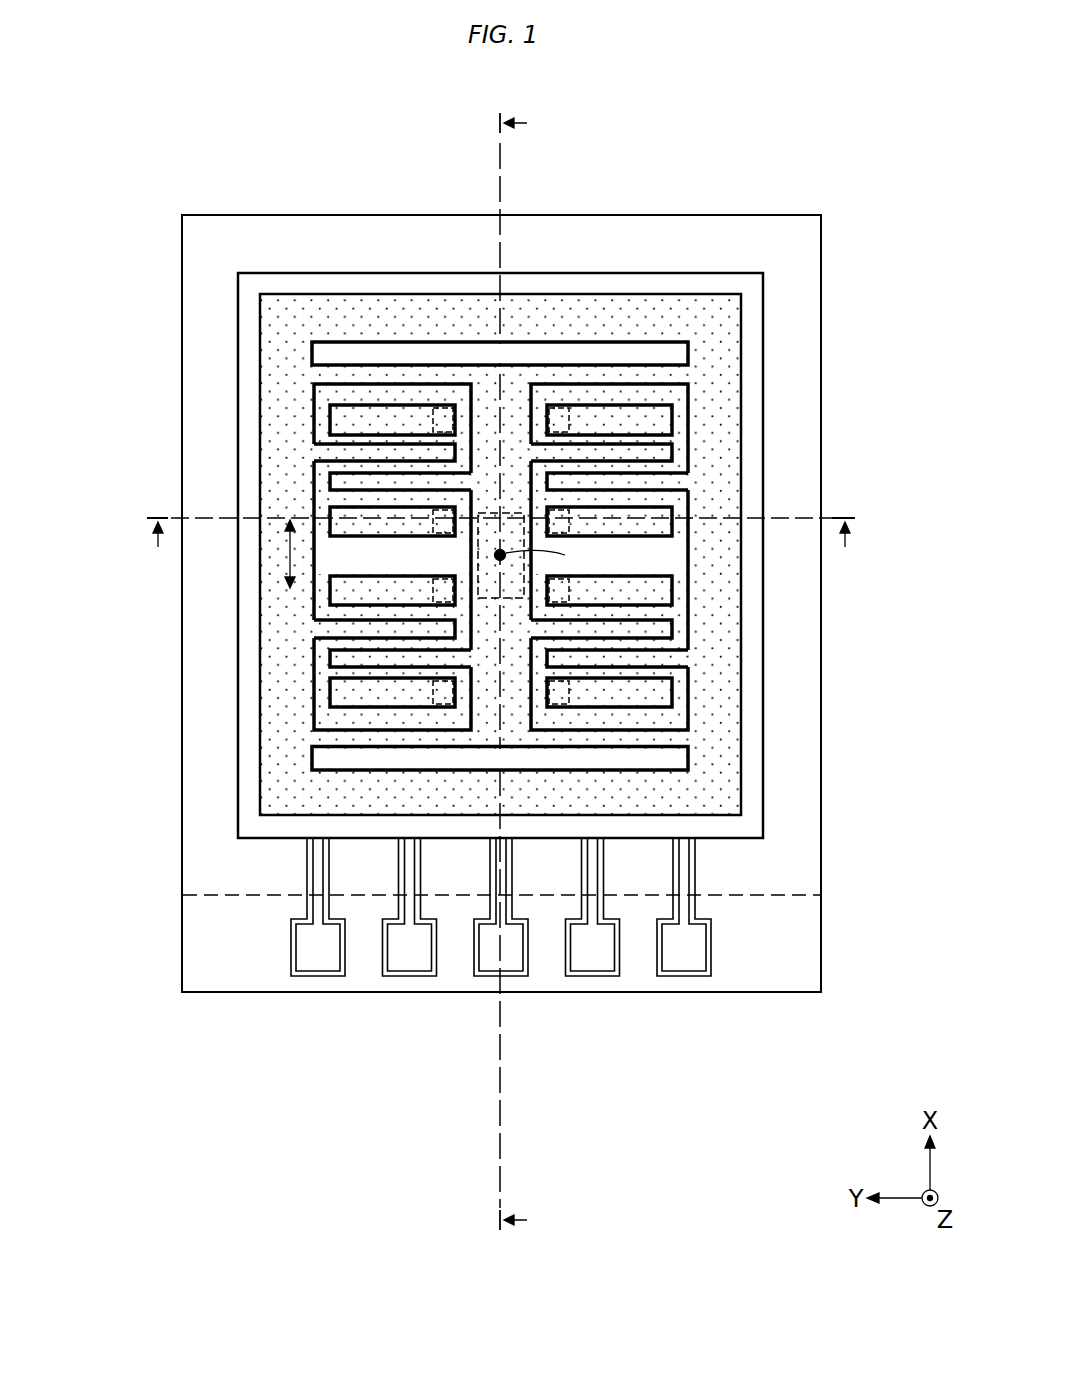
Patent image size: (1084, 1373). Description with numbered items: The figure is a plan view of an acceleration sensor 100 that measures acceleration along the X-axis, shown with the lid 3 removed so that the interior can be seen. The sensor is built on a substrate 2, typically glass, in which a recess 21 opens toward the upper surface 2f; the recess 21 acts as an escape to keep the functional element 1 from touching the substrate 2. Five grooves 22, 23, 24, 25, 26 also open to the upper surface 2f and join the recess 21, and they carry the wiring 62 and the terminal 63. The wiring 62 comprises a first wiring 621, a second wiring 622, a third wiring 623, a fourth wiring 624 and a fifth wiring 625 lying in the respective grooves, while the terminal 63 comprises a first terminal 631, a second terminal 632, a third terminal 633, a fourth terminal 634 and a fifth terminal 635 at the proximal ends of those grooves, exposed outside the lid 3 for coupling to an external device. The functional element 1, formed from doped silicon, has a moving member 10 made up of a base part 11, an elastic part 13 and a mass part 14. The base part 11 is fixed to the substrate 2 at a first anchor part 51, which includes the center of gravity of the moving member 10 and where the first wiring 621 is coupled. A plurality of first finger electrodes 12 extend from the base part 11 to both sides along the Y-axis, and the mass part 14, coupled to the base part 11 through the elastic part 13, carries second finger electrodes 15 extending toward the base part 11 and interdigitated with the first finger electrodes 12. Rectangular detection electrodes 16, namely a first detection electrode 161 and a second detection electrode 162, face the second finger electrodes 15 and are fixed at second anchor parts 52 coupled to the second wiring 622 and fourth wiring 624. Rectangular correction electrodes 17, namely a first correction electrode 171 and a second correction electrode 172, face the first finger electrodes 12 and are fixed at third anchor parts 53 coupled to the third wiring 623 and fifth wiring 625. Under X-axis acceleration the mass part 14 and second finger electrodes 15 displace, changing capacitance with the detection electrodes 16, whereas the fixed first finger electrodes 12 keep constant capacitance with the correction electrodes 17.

The acceleration sensor 100 is at (855, 168).
The functional element 1 is at (352, 297).
The substrate 2 is at (822, 805).
The upper surface 2f is at (822, 940).
The lid 3 is at (817, 238).
The moving member 10 is at (296, 300).
The base part 11 is at (488, 400).
The first finger electrode 12 is at (325, 480).
The elastic part 13 is at (405, 365).
The mass part 14 is at (280, 357).
The second finger electrode 15 is at (320, 452).
The detection electrode 16 is at (502, 557).
The first detection electrode 161 is at (332, 407).
The second detection electrode 162 is at (670, 512).
The correction electrode 17 is at (502, 557).
The first correction electrode 171 is at (332, 510).
The second correction electrode 172 is at (670, 408).
The recess 21 is at (763, 309).
The groove 22 is at (509, 877).
The groove 23 is at (418, 877).
The groove 24 is at (326, 877).
The groove 25 is at (601, 877).
The groove 26 is at (692, 877).
The first anchor part 51 is at (493, 600).
The second anchor part 52 is at (433, 430).
The third anchor part 53 is at (433, 530).
The wiring 62 is at (510, 976).
The first wiring 621 is at (505, 907).
The second wiring 622 is at (414, 907).
The third wiring 623 is at (322, 907).
The fourth wiring 624 is at (597, 907).
The fifth wiring 625 is at (688, 907).
The terminal 63 is at (477, 1074).
The first terminal 631 is at (488, 958).
The second terminal 632 is at (397, 958).
The third terminal 633 is at (305, 958).
The fourth terminal 634 is at (580, 958).
The fifth terminal 635 is at (671, 958).